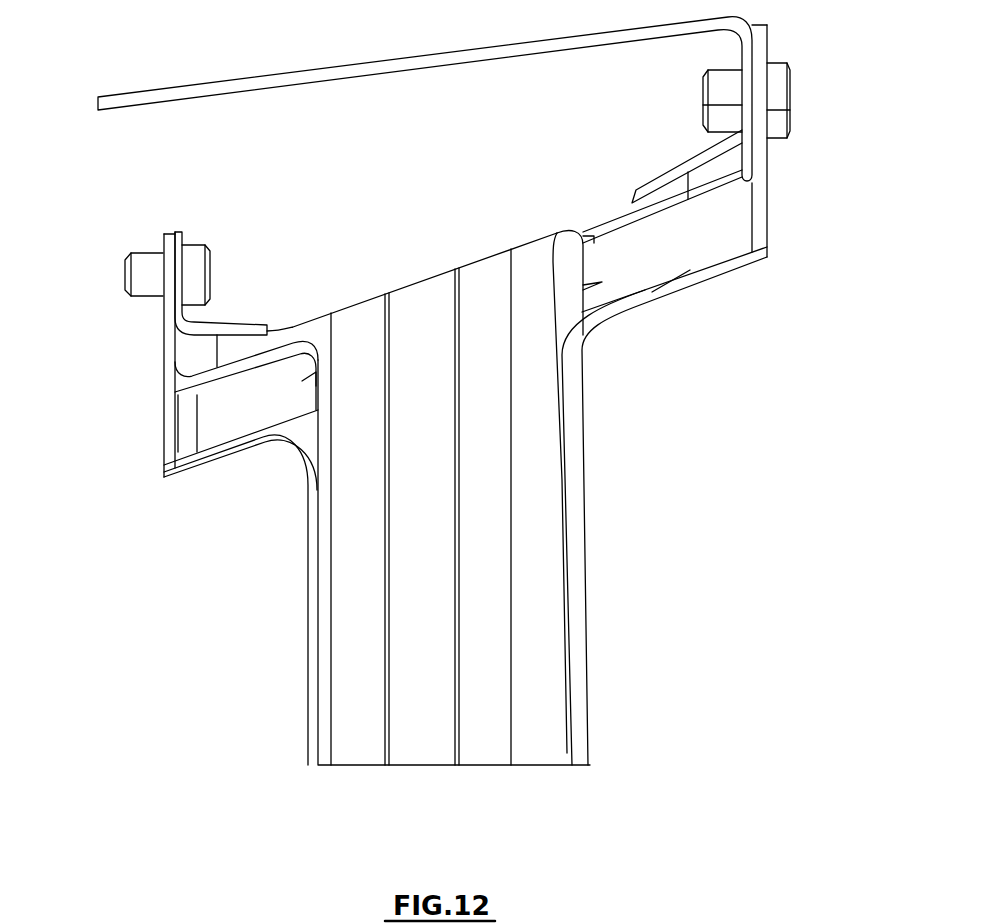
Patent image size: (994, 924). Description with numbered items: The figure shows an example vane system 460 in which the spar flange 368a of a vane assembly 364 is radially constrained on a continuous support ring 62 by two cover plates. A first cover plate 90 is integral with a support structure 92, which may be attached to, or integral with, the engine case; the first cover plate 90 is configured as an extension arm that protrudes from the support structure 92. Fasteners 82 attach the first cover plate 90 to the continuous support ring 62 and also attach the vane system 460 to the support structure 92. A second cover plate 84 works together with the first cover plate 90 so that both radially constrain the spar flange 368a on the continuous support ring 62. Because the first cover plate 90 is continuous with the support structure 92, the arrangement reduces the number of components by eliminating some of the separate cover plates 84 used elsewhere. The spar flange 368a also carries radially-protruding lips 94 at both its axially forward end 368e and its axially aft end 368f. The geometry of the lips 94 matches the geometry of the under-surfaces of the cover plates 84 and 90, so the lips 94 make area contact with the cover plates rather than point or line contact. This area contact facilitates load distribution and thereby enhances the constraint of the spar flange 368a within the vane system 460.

The vane system 460 is at (98, 219).
The support structure 92 is at (368, 60).
The first cover plate 90 is at (683, 158).
The fasteners 82 is at (794, 89).
The second cover plate 84 is at (213, 322).
The radially-protruding lips 94 is at (688, 197).
The vane assembly 364 is at (653, 508).
The spar flange 368a is at (540, 237).
The axially forward end of the spar flange 368e is at (212, 367).
The axially aft end of the spar flange 368f is at (684, 205).
The continuous support ring 62 is at (670, 213).